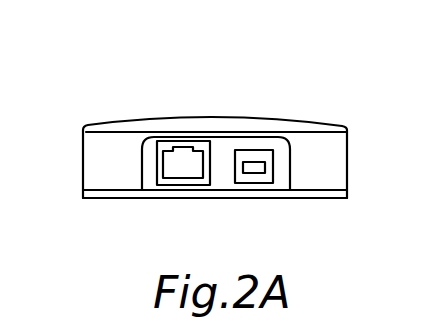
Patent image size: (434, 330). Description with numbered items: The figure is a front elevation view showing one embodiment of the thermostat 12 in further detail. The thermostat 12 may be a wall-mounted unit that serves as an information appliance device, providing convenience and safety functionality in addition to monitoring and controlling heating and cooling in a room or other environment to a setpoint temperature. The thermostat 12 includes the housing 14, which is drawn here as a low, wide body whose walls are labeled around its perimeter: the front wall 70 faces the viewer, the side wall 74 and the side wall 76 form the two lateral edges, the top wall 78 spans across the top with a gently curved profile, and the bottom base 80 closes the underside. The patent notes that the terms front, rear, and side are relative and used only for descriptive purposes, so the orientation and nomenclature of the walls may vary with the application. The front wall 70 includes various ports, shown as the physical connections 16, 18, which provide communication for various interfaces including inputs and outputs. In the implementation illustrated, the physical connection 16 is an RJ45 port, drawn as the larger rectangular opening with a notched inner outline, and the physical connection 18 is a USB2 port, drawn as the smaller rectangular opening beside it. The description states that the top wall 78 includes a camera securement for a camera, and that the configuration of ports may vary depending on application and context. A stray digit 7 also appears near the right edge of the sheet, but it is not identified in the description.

The thermostat 12 is at (217, 148).
The housing 14 is at (211, 92).
The top wall 78 is at (218, 118).
The side wall 74 is at (348, 147).
The front wall 70 is at (217, 197).
The side wall 76 is at (83, 163).
The bottom base 80 is at (103, 199).
The physical connection 16 is at (181, 178).
The physical connection 18 is at (254, 178).
The partial numeral (cut off at sheet edge) 7 is at (427, 213).